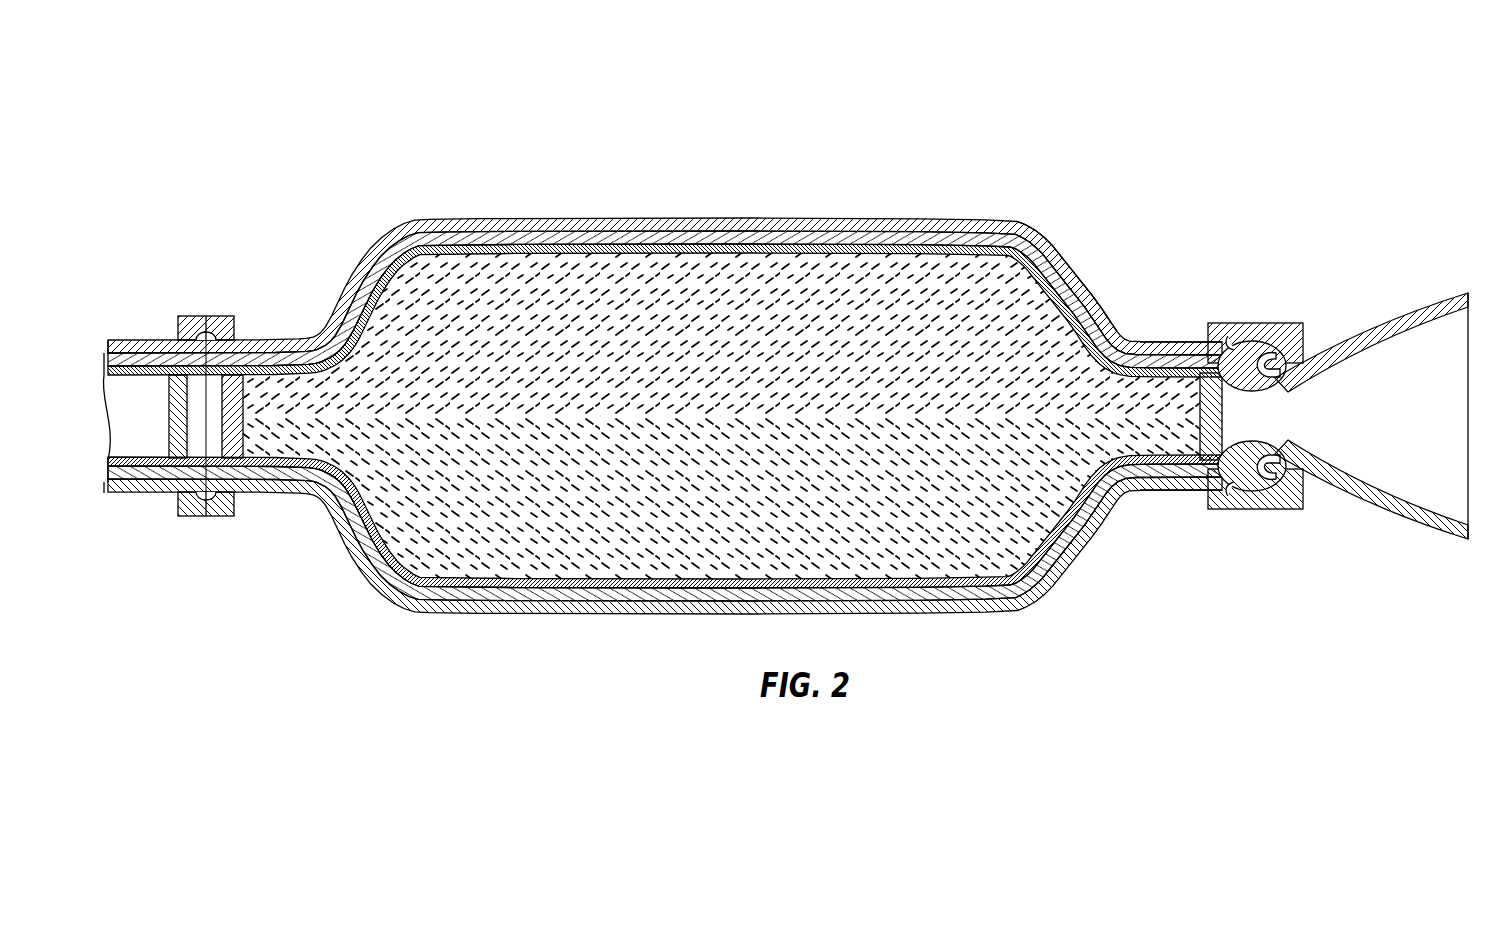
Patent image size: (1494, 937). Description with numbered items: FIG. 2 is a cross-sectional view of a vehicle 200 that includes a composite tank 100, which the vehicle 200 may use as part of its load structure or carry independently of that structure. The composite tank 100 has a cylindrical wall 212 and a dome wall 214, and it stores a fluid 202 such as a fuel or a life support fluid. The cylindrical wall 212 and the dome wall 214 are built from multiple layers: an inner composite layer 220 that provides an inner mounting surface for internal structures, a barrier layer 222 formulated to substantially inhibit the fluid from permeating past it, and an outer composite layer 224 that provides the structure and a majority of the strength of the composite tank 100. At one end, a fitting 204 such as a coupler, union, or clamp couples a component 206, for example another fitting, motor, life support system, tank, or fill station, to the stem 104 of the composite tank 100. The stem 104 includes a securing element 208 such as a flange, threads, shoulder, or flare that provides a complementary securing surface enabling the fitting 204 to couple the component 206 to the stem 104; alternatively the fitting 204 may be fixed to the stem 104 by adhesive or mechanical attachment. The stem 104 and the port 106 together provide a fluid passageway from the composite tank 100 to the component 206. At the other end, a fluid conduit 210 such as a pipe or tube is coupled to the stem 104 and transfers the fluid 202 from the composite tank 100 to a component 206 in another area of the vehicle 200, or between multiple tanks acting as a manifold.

The vehicle 200 is at (1406, 78).
The composite tank 100 is at (949, 613).
The cylindrical wall 212 is at (957, 217).
The outer composite layer 224 is at (716, 226).
The barrier layer 222 is at (640, 240).
The inner composite layer 220 is at (562, 250).
The dome wall 214 is at (1092, 272).
The stem 104 is at (1165, 340).
The fluid 202 is at (487, 295).
The fluid conduit 210 is at (135, 438).
The fitting 204 is at (232, 518).
The port 106 is at (1192, 443).
The securing element 208 is at (1232, 335).
The component 206 is at (1424, 530).